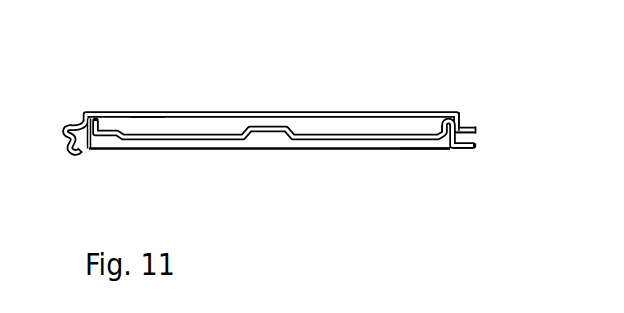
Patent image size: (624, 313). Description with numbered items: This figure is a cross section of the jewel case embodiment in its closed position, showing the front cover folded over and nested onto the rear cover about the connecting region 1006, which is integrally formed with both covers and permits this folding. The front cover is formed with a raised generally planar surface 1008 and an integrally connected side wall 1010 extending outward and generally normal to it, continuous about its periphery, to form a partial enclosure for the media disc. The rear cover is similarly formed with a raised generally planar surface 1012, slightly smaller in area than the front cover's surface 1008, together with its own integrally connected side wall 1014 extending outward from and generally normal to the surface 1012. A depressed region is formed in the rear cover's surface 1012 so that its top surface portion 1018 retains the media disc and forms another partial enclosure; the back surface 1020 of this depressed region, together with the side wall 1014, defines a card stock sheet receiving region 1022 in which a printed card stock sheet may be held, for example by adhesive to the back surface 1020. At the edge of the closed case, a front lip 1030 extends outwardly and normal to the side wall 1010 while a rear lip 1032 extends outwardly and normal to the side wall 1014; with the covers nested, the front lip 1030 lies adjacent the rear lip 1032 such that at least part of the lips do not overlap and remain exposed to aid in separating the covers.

The connecting region 1006 is at (77, 154).
The raised generally planar surface 1008 is at (260, 110).
The side wall 1010 is at (462, 116).
The raised generally planar surface 1012 is at (437, 117).
The side wall 1014 is at (457, 149).
The top surface portion 1018 is at (147, 128).
The back surface 1020 is at (170, 150).
The card stock sheet receiving region 1022 is at (427, 150).
The front lip 1030 is at (476, 127).
The rear lip 1032 is at (471, 148).